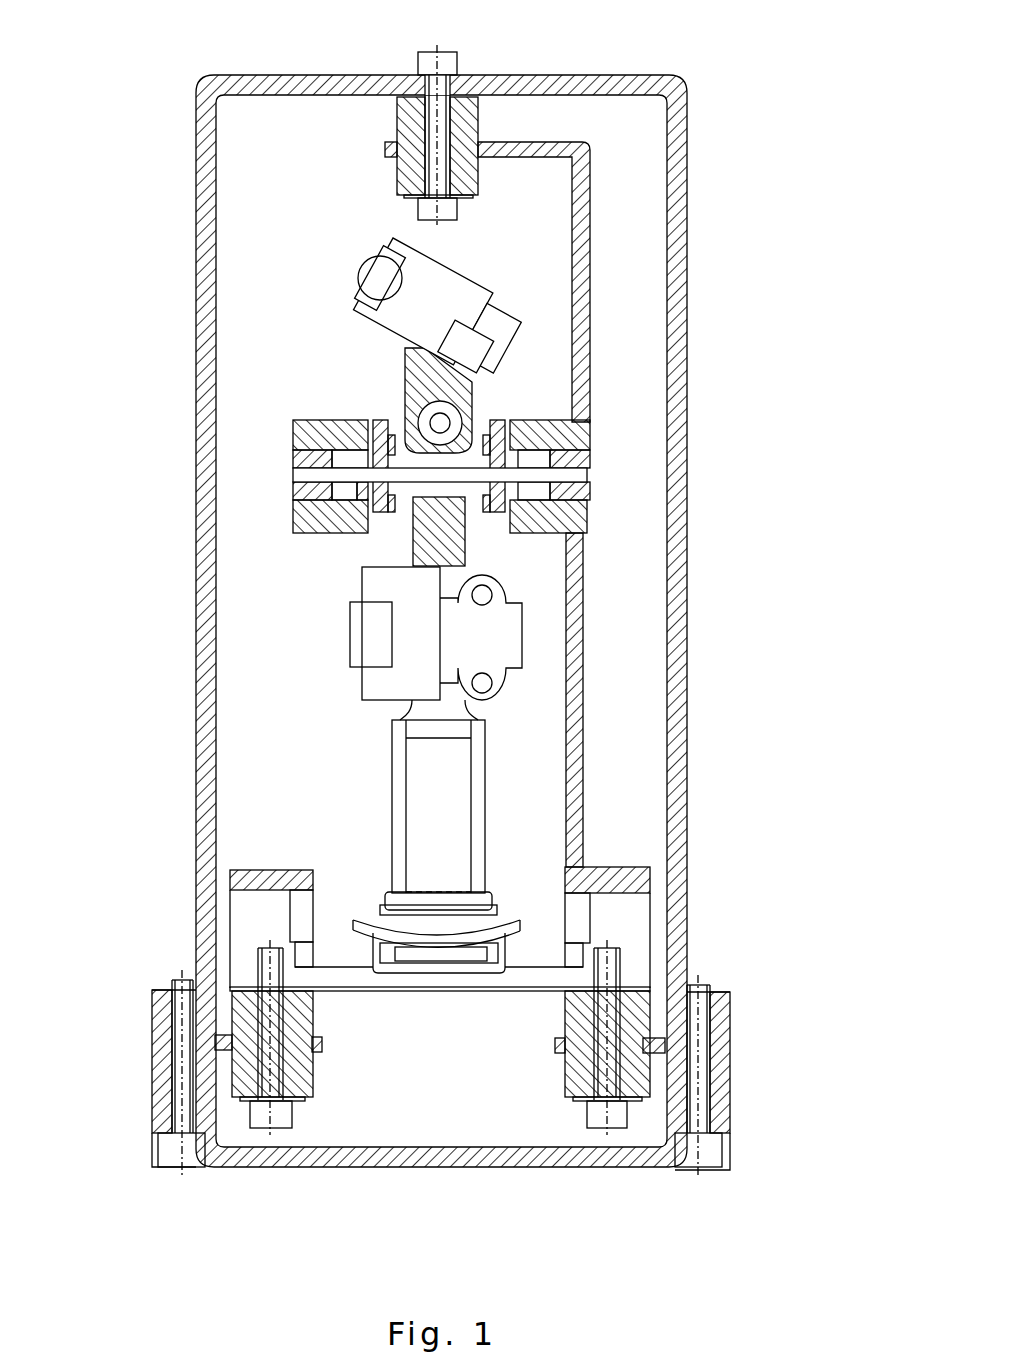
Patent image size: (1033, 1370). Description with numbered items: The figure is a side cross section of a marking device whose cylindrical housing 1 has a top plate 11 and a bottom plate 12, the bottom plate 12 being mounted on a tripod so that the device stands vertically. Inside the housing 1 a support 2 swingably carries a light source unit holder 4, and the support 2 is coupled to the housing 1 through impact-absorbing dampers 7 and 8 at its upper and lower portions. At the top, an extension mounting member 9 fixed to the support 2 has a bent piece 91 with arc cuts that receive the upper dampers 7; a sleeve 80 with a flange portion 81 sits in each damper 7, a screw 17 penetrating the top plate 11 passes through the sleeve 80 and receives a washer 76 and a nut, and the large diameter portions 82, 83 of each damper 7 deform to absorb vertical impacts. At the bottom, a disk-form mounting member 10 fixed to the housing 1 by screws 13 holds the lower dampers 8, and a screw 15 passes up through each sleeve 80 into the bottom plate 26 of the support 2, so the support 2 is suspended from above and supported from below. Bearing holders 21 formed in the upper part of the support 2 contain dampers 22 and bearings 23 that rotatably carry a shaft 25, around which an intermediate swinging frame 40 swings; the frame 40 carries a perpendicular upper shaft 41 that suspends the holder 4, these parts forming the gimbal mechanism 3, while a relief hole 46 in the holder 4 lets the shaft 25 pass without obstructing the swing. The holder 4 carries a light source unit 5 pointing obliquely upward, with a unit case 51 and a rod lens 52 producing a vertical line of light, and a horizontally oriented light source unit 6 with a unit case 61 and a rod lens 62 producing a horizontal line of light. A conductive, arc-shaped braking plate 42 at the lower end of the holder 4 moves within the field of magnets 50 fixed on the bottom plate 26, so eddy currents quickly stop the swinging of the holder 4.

The housing 1 is at (683, 447).
The support 2 is at (687, 645).
The gimbal mechanism 3 is at (451, 404).
The light source unit holder 4 is at (450, 552).
The light source unit 5 is at (521, 269).
The light source unit 6 is at (525, 782).
The damper 7 is at (496, 556).
The damper 8 is at (447, 1072).
The extension mounting member 9 is at (590, 173).
The mounting member 10 is at (160, 1037).
The top plate 11 is at (632, 80).
The bottom plate 12 is at (410, 1157).
The screw 13 is at (178, 1108).
The screw 15 is at (260, 1122).
The screw 17 is at (428, 62).
The bearing holder 21 is at (293, 437).
The damper 22 is at (293, 455).
The bearing 23 is at (352, 492).
The shaft 25 is at (530, 503).
The bottom plate 26 is at (390, 985).
The intermediate swinging frame 40 is at (420, 400).
The shaft 41 is at (445, 425).
The braking plate 42 is at (517, 920).
The relief hole 46 is at (423, 497).
The magnet 50 is at (447, 953).
The unit case 51 is at (397, 328).
The rod lens 52 is at (348, 278).
The unit case 61 is at (370, 680).
The rod lens 62 is at (370, 640).
The washer 76 is at (410, 200).
The sleeve 80 is at (397, 182).
The flange portion 81 is at (398, 97).
The large diameter portion 82 is at (187, 998).
The large diameter portion 83 is at (222, 1083).
The bent piece 91 is at (385, 149).